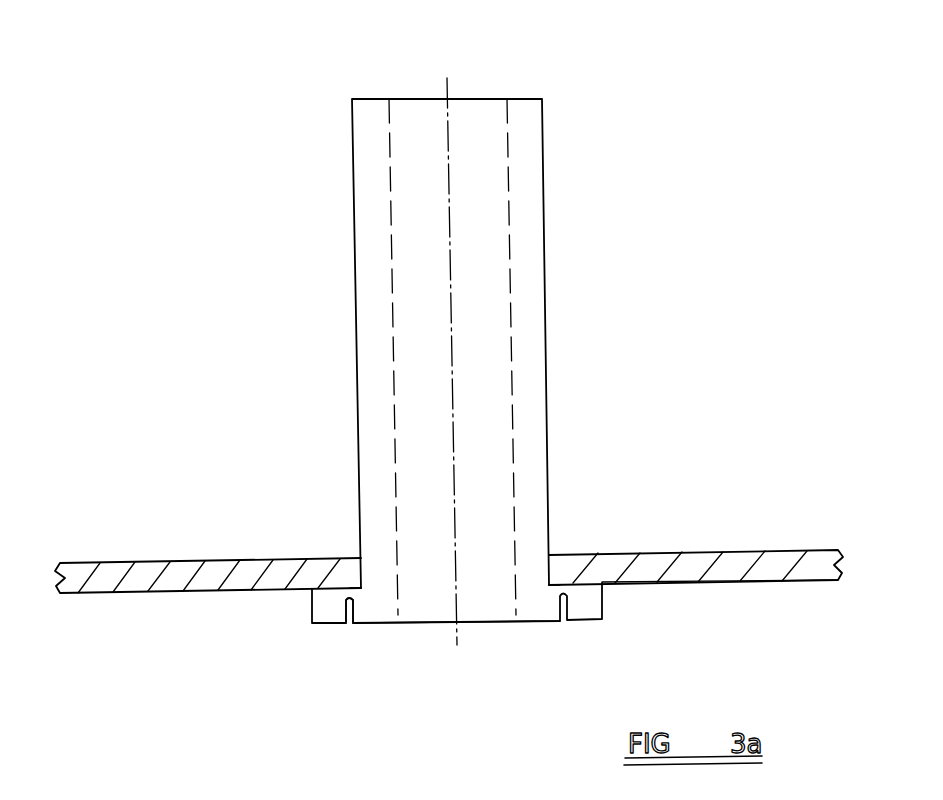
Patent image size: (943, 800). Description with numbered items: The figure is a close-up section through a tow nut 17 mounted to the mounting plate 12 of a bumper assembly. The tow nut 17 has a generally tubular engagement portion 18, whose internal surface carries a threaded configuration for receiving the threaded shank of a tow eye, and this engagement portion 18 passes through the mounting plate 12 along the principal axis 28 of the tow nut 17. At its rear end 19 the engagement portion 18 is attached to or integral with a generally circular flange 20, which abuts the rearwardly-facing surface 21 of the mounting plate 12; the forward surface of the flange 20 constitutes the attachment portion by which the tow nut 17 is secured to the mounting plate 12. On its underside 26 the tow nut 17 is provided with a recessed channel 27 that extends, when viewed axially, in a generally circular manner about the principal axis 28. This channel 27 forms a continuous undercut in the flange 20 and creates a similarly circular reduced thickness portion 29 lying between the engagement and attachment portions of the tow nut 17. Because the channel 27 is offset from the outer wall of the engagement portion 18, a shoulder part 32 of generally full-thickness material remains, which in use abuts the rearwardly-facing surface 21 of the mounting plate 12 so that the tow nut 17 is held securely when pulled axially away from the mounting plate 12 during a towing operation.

The mounting plate 12 is at (142, 562).
The tow nut 17 is at (575, 337).
The engagement portion 18 is at (543, 212).
The rear end 19 is at (585, 543).
The flange 20 is at (312, 603).
The rearwardly-facing surface 21 is at (699, 582).
The underside 26 is at (481, 622).
The recessed channel 27 is at (348, 623).
The principal axis 28 is at (441, 78).
The reduced thickness portion 29 is at (348, 586).
The shoulder part 32 is at (551, 584).